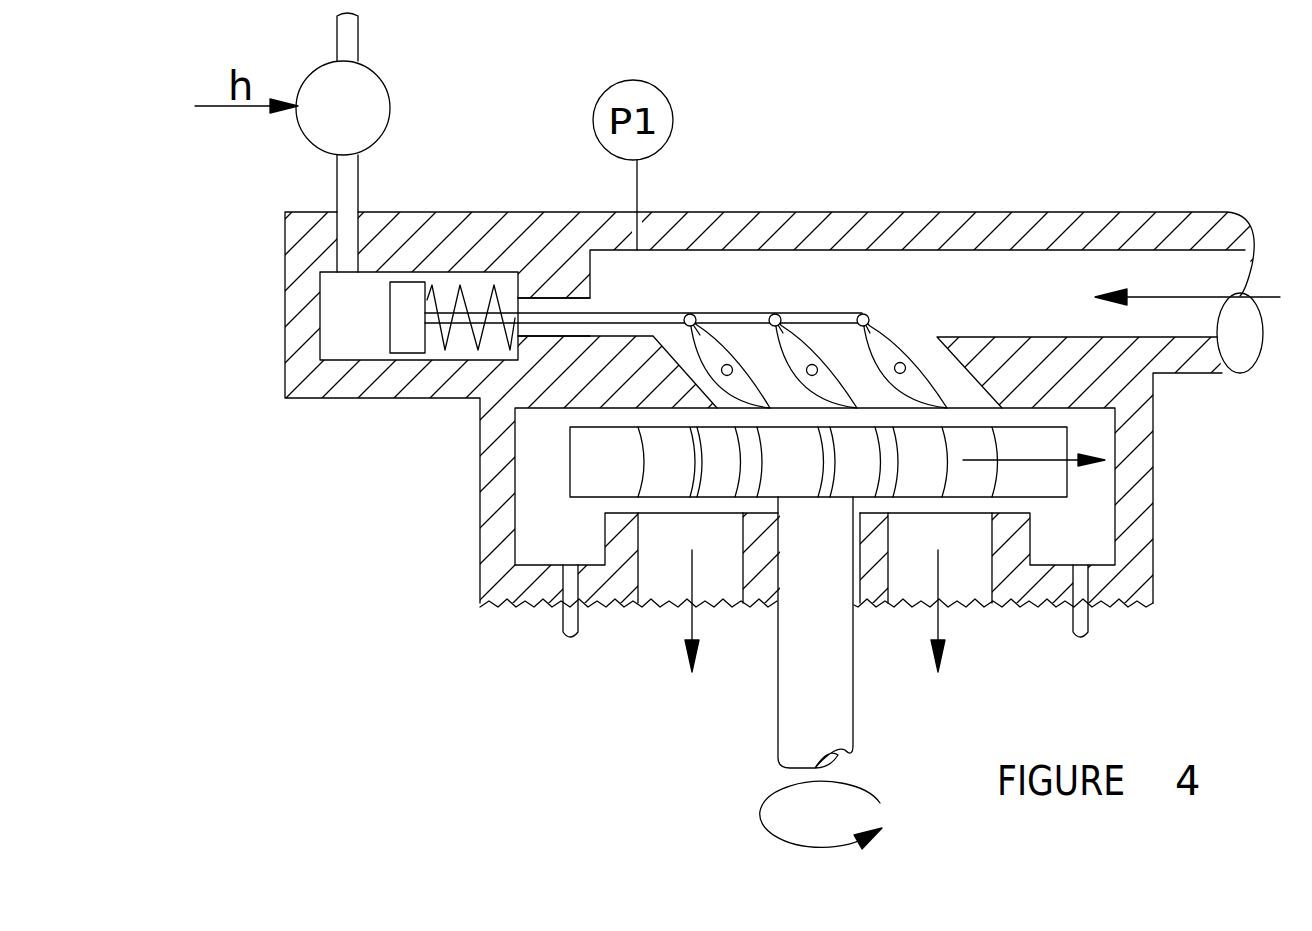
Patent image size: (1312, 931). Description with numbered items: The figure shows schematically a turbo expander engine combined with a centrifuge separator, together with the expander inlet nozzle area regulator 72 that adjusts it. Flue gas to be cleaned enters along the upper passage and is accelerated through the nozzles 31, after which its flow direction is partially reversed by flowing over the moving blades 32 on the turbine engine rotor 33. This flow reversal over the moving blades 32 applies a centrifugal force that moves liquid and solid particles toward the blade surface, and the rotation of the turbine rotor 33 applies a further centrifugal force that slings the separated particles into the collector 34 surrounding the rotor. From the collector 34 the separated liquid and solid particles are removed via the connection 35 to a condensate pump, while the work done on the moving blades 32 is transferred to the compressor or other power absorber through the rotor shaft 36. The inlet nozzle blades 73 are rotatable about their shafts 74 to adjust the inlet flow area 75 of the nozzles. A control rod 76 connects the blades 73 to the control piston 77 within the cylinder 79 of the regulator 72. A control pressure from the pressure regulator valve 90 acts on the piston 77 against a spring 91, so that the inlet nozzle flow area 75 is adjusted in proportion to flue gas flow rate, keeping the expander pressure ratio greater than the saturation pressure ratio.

The nozzles 31 is at (833, 350).
The moving blades 32 is at (735, 465).
The turbine engine rotor 33 is at (605, 463).
The collector 34 is at (550, 545).
The connection 35 is at (562, 620).
The rotor shaft 36 is at (800, 688).
The expander inlet nozzle area regulator 72 is at (298, 310).
The inlet nozzle blades 73 is at (713, 347).
The shafts 74 is at (770, 335).
The inlet flow area 75 is at (680, 345).
The control rod 76 is at (585, 298).
The control piston 77 is at (412, 300).
The cylinder 79 is at (333, 363).
The pressure regulator valve 90 is at (340, 83).
The spring 91 is at (470, 337).